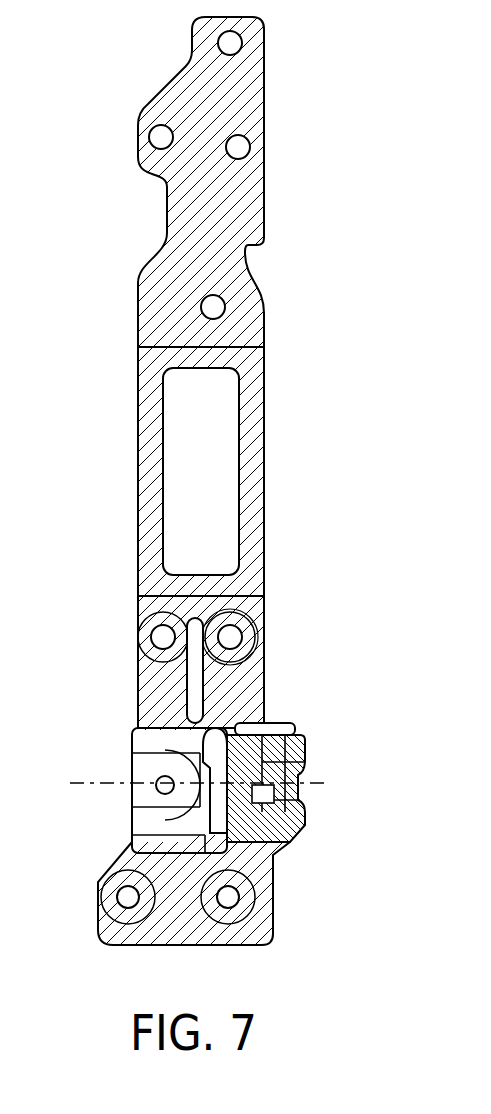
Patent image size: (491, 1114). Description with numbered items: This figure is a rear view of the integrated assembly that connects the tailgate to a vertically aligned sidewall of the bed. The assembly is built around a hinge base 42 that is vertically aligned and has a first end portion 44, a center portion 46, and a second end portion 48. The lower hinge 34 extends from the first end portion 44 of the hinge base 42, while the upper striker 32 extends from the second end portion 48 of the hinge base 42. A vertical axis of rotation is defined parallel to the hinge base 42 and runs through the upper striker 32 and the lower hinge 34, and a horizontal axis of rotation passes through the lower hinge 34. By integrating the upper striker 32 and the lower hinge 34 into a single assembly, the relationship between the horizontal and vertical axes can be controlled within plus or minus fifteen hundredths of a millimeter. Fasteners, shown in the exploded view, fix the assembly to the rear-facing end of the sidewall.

The upper striker 32 is at (228, 182).
The lower hinge 34 is at (250, 698).
The hinge base 42 is at (245, 480).
The first end portion 44 is at (264, 596).
The center portion 46 is at (253, 455).
The second end portion 48 is at (264, 350).